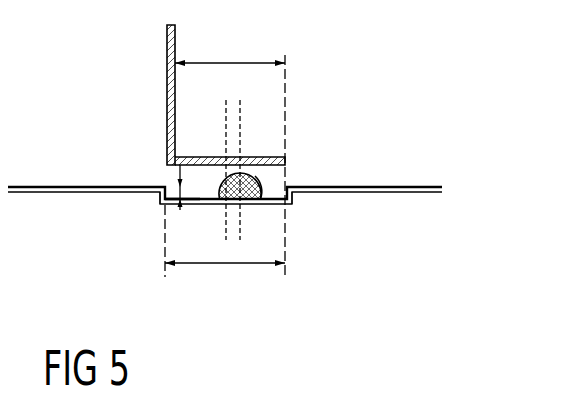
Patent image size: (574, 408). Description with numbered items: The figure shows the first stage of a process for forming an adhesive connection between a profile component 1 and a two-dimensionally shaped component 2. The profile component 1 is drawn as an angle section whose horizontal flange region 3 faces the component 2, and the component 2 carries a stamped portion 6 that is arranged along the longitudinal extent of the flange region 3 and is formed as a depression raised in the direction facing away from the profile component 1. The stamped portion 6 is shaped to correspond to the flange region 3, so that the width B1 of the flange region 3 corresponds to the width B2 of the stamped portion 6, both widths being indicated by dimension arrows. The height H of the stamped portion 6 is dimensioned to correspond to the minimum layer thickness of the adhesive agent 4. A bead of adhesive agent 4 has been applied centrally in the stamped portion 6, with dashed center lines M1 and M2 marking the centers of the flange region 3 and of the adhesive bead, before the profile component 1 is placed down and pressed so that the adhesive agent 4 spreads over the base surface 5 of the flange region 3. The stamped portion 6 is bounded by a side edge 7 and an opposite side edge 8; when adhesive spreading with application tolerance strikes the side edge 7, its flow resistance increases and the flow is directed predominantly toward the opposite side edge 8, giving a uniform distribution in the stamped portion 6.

The profile component 1 is at (167, 55).
The two-dimensionally shaped component 2 is at (392, 192).
The flange region 3 is at (278, 162).
The adhesive agent 4 is at (233, 190).
The base surface 5 is at (266, 175).
The stamped portion 6 is at (165, 200).
The side edge 7 is at (289, 183).
The opposite side edge 8 is at (167, 186).
The height of the stamped portion H is at (193, 187).
The width of the flange region B1 is at (230, 152).
The width of the stamped portion B2 is at (225, 255).
The arm center line M1 is at (227, 135).
The bead center line M2 is at (241, 233).